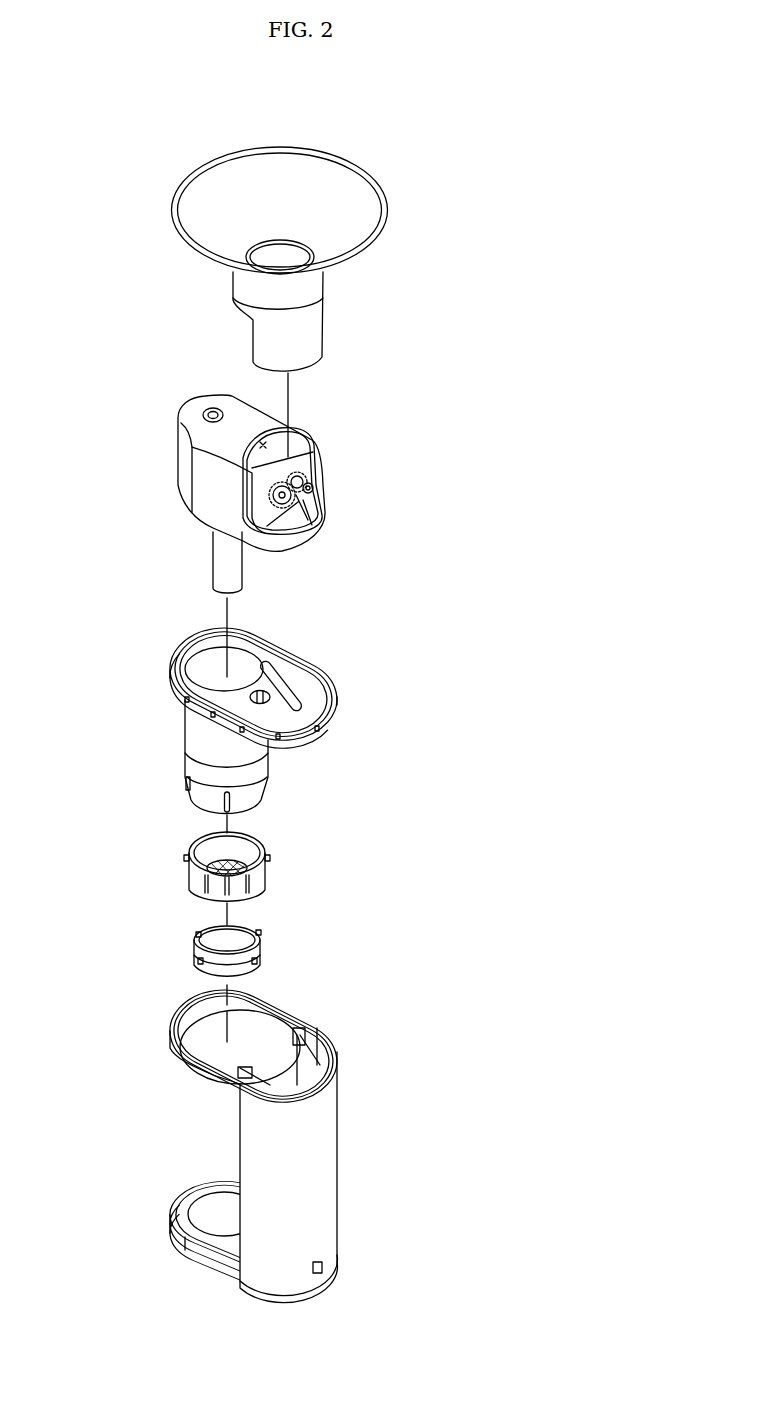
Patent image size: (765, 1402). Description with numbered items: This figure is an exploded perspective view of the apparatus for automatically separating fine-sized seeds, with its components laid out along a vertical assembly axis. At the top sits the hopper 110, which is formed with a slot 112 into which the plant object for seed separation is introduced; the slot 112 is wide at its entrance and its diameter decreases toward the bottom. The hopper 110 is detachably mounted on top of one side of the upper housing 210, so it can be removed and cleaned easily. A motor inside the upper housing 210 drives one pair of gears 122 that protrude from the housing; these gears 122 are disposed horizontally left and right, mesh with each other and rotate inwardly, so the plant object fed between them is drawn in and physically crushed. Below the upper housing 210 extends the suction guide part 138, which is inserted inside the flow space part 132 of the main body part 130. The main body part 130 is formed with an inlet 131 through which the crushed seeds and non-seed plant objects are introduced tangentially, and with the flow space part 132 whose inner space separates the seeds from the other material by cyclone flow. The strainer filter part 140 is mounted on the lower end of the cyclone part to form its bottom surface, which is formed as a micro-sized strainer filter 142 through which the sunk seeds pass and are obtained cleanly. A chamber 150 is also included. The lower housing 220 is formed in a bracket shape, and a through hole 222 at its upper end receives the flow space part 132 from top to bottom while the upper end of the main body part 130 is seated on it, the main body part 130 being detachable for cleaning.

The hopper 110 is at (360, 227).
The slot 112 is at (292, 256).
The upper housing 210 is at (249, 473).
The gear 122 is at (316, 483).
The suction guide part 138 is at (222, 560).
The main body part 130 is at (289, 707).
The inlet 131 is at (280, 688).
The flow space part 132 is at (190, 735).
The strainer filter part 140 is at (300, 840).
The strainer filter 142 is at (232, 868).
The chamber 150 is at (304, 942).
The lower housing 220 is at (324, 1135).
The through hole 222 is at (258, 1045).